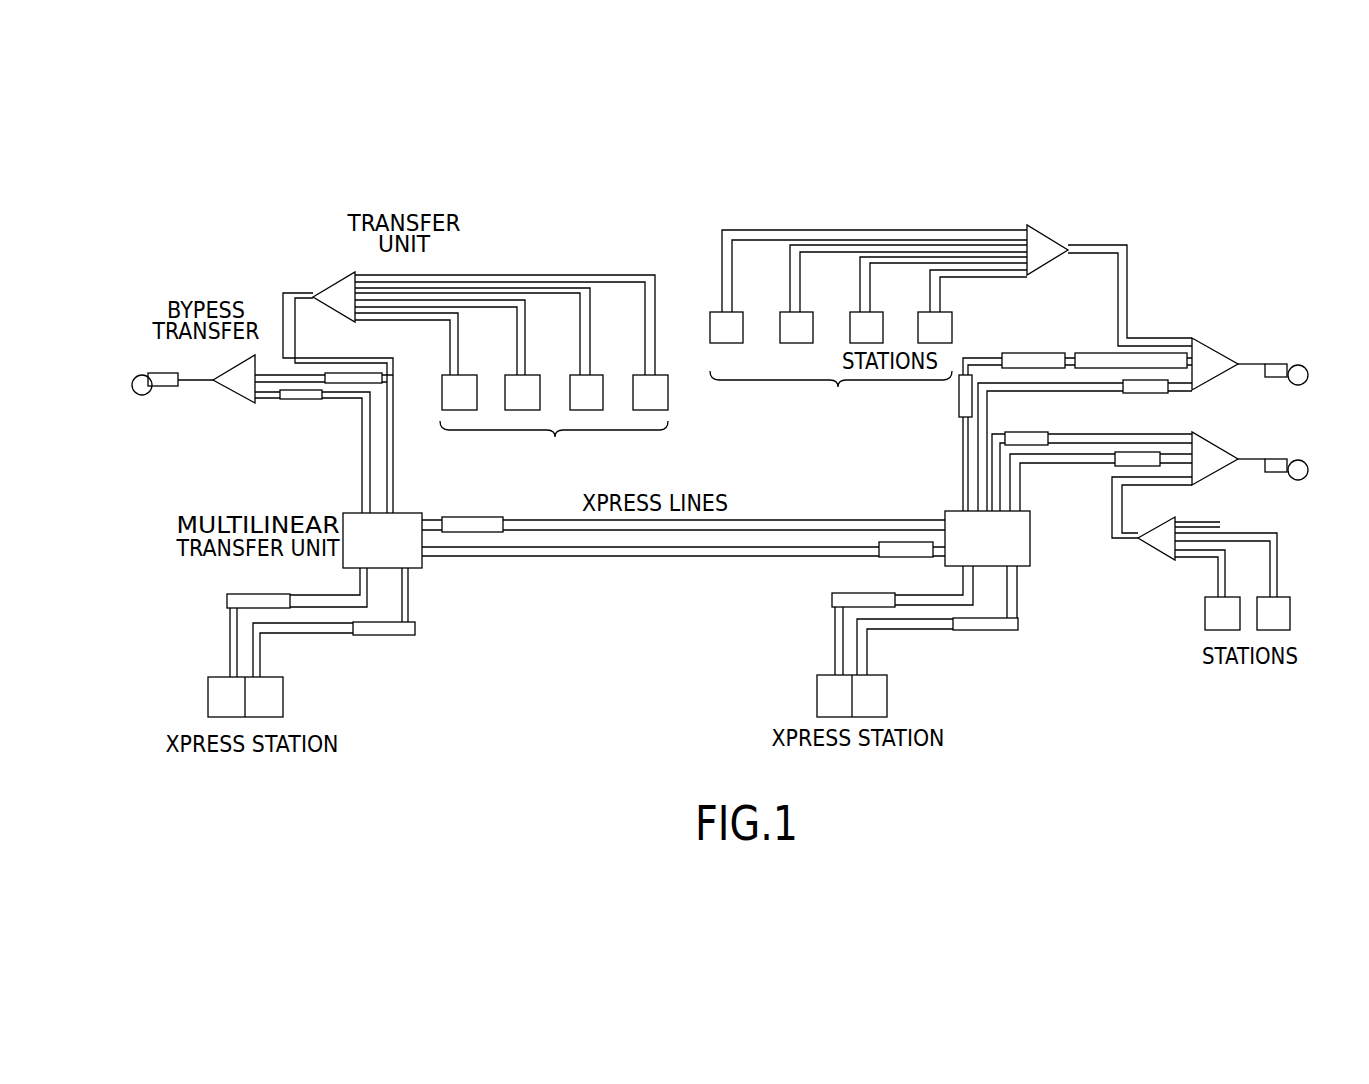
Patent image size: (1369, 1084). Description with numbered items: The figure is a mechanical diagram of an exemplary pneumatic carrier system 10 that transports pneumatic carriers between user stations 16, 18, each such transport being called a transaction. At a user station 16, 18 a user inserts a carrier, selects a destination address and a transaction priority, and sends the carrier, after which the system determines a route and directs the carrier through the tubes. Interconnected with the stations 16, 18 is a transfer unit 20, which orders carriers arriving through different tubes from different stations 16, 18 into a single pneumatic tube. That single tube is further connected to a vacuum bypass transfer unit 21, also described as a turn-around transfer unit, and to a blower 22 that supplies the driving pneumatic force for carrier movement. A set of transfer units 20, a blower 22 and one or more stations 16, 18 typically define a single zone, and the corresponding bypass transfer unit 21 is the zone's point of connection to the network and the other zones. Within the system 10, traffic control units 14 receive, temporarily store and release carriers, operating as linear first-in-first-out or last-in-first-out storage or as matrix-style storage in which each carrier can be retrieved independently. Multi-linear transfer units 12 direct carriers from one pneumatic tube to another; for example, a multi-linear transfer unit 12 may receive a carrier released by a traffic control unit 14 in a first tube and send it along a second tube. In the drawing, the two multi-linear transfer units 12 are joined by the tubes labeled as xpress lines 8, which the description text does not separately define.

The xpress lines 8 is at (788, 520).
The pneumatic carrier system 10 is at (598, 640).
The multi-linear transfer unit 12 is at (425, 570).
The traffic control unit 14 is at (350, 372).
The user station 16 is at (285, 690).
The user station 18 is at (1320, 622).
The transfer unit 20 is at (330, 280).
The vacuum bypass transfer unit 21 is at (258, 405).
The blower 22 is at (150, 395).